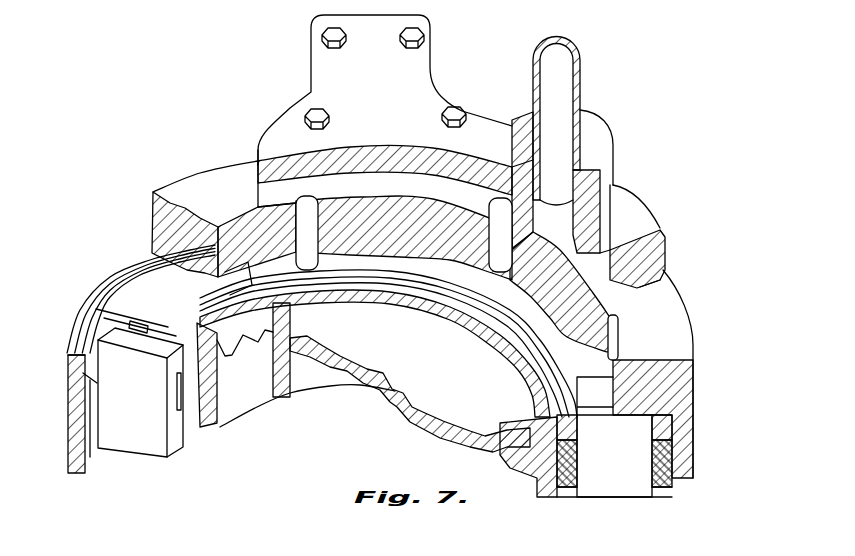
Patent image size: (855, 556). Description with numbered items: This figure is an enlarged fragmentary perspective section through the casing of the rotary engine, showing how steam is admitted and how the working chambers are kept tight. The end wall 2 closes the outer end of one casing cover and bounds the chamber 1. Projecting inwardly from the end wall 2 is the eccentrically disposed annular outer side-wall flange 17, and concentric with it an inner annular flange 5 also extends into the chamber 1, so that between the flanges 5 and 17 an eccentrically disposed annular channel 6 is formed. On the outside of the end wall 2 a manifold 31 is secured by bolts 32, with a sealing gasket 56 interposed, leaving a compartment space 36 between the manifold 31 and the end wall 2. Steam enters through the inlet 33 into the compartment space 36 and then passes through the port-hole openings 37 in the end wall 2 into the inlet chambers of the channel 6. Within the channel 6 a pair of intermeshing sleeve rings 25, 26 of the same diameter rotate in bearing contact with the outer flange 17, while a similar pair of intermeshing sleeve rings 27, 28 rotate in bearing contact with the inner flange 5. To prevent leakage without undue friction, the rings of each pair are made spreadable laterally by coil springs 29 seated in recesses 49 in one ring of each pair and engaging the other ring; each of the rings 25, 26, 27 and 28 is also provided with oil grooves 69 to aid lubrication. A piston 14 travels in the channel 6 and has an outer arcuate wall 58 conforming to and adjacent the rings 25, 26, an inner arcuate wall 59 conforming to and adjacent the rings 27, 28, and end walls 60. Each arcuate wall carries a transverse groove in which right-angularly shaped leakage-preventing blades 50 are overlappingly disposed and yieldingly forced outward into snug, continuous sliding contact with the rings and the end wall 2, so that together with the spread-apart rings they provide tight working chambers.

The chamber 1 is at (390, 403).
The end wall 2 is at (240, 152).
The inner annular flange 5 is at (298, 390).
The annular channel 6 is at (322, 268).
The piston 14 is at (160, 290).
The outer side-wall flange 17 is at (697, 437).
The sleeve ring 25 is at (97, 310).
The sleeve ring 26 is at (70, 430).
The sleeve ring 27 is at (597, 500).
The sleeve ring 28 is at (256, 346).
The coil springs 29 is at (560, 492).
The manifold 31 is at (637, 222).
The bolts 32 is at (335, 33).
The inlet 33 is at (582, 60).
The compartment space 36 is at (332, 190).
The port-hole openings 37 is at (306, 203).
The recesses 49 is at (652, 452).
The leakage-preventing blades 50 is at (200, 293).
The sealing gasket 56 is at (225, 185).
The outer arcuate wall 58 is at (130, 292).
The inner arcuate wall 59 is at (192, 400).
The end walls 60 is at (546, 320).
The oil grooves 69 is at (210, 430).